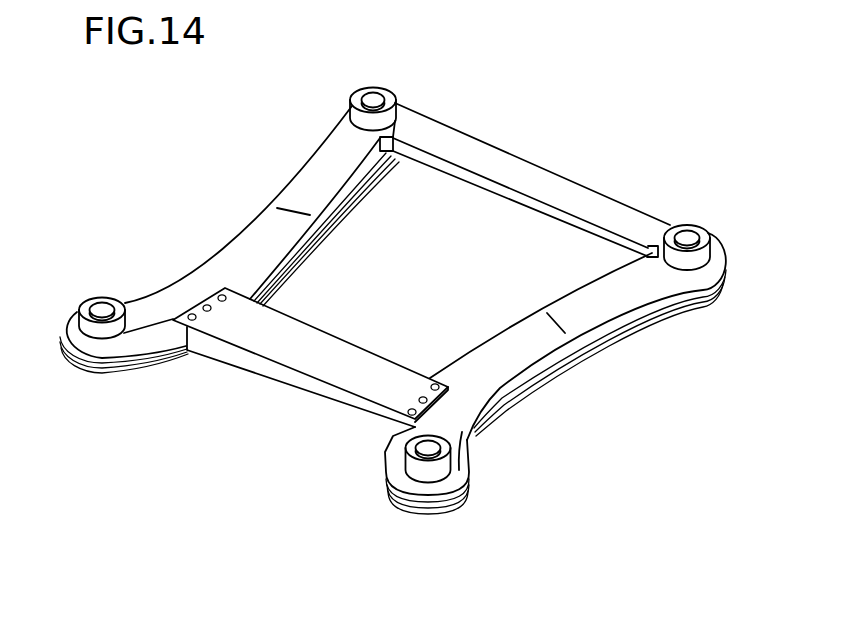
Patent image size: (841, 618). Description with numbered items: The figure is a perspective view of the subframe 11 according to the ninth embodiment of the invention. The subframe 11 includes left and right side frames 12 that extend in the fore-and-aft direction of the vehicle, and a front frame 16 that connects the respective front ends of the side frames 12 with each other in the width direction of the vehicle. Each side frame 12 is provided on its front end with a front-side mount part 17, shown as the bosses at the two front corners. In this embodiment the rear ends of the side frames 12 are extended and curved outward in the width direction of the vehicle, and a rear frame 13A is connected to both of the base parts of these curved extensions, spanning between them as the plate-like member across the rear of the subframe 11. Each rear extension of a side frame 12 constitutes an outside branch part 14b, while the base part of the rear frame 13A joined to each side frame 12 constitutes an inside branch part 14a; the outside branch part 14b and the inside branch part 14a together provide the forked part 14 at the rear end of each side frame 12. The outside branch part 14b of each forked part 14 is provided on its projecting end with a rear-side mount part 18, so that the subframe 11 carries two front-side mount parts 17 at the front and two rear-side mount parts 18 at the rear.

The subframe 11 is at (262, 160).
The side frame 12 is at (251, 226).
The rear frame 13A is at (280, 378).
The forked part 14 is at (172, 278).
The inside branch part 14a is at (230, 323).
The outside branch part 14b is at (103, 342).
The front frame 16 is at (538, 184).
The front-side mount part 17 is at (388, 97).
The rear-side mount part 18 is at (86, 299).